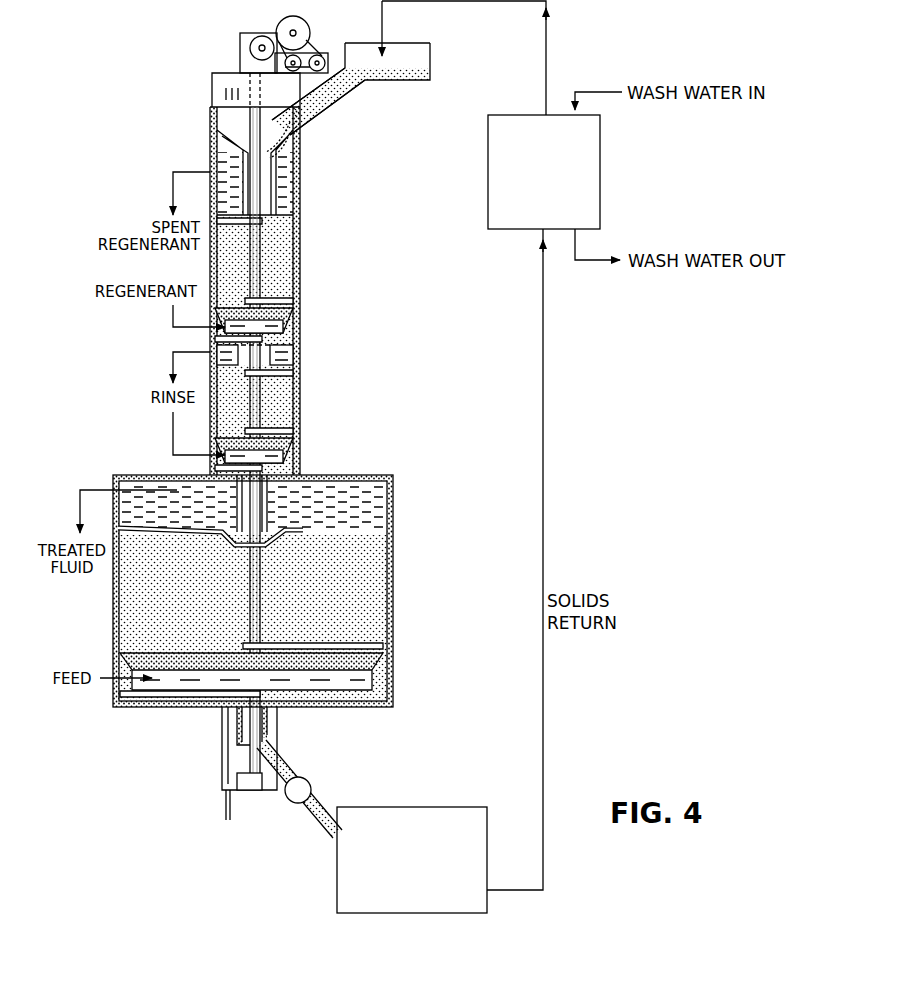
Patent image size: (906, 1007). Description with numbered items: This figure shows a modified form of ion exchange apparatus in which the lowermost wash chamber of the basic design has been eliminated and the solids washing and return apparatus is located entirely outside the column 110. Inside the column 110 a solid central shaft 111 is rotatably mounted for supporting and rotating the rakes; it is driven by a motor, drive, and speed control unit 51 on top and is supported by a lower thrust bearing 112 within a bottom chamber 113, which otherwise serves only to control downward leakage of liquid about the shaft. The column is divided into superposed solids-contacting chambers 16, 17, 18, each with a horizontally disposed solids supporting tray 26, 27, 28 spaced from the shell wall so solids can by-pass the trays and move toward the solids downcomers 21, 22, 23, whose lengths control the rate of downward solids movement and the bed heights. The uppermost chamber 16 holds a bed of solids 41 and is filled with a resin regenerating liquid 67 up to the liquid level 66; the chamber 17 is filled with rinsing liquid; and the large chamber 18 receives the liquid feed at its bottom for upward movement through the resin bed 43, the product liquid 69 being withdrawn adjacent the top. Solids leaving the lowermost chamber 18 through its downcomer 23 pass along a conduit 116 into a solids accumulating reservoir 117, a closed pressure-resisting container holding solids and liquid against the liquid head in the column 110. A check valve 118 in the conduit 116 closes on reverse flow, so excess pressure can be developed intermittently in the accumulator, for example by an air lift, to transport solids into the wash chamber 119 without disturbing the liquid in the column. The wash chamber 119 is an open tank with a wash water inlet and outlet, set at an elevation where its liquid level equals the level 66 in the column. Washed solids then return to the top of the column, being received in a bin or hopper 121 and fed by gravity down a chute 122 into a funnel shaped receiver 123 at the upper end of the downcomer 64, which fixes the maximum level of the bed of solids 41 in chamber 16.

The solids-contacting chamber 16 is at (290, 147).
The solids-contacting chamber 17 is at (288, 401).
The solids-contacting chamber 18 is at (372, 496).
The solids downcomer 21 is at (295, 358).
The solids downcomer 22 is at (272, 492).
The solids downcomer 23 is at (262, 722).
The solids supporting tray 26 is at (300, 320).
The solids supporting tray 27 is at (298, 450).
The solids supporting tray 28 is at (385, 673).
The bed of solids 41 is at (300, 222).
The bed of solids 43 is at (393, 556).
The motor, drive, and speed control unit 51 is at (240, 50).
The downcomer 64 is at (300, 167).
The liquid level 66 is at (215, 150).
The resin regenerating liquid 67 is at (288, 183).
The product liquid 69 is at (357, 516).
The column 110 is at (303, 250).
The solid central shaft 111 is at (255, 118).
The lower thrust bearing 112 is at (235, 790).
The bottom chamber 113 is at (228, 735).
The conduit 116 is at (312, 820).
The solids accumulating reservoir 117 is at (425, 806).
The check valve 118 is at (311, 782).
The wash chamber 119 is at (604, 166).
The bin or hopper 121 is at (432, 67).
The chute 122 is at (305, 112).
The funnel shaped receiver 123 is at (318, 136).